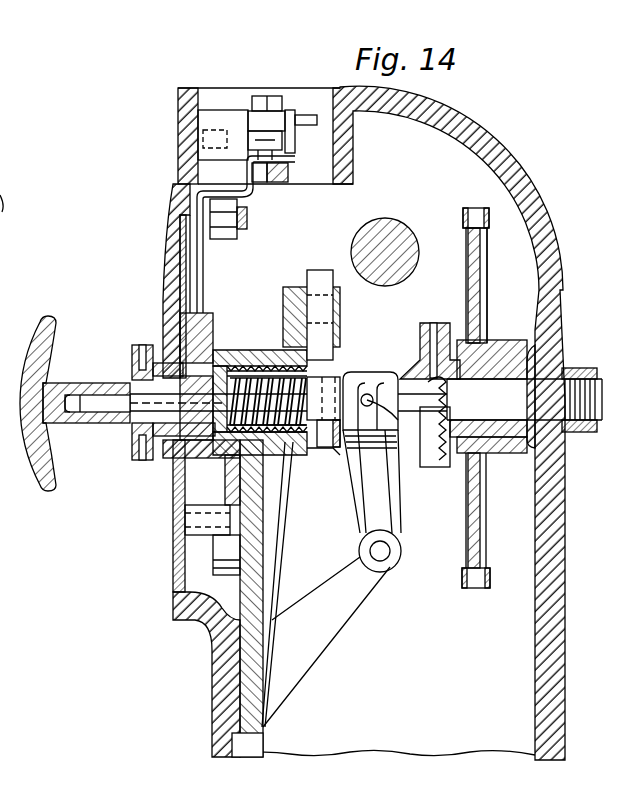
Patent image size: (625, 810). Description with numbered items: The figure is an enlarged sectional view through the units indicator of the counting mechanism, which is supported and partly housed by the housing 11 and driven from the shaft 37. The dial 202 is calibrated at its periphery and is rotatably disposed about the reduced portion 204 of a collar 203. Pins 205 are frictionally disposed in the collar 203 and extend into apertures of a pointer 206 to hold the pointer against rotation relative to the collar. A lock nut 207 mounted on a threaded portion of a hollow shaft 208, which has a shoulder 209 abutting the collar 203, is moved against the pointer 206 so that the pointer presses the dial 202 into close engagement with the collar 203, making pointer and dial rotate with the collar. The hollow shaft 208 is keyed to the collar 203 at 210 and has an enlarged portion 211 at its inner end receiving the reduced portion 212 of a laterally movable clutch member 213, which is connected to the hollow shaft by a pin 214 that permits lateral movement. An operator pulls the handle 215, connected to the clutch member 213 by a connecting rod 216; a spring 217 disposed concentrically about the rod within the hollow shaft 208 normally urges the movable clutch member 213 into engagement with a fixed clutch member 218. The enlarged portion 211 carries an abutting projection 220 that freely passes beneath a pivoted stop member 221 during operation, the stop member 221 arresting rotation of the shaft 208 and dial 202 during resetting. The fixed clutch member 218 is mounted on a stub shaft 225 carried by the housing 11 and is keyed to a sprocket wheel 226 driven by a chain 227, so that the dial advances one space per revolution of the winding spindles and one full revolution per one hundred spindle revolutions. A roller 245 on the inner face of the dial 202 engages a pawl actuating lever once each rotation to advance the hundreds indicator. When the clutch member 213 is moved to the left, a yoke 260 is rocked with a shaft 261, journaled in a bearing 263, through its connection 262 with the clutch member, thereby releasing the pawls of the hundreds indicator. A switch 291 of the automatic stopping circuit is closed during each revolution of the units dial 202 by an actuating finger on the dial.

The housing 11 is at (515, 163).
The shaft 37 is at (385, 237).
The dial 202 is at (173, 230).
The collar 203 is at (195, 323).
The reduced portion 204 is at (210, 367).
The pins 205 is at (162, 375).
The pointer 206 is at (167, 288).
The lock nut 207 is at (150, 453).
The hollow shaft 208 is at (133, 433).
The shoulder 209 is at (227, 362).
The key 210 is at (127, 383).
The enlarged portion 211 is at (320, 440).
The reduced portion 212 is at (350, 372).
The movable clutch member 213 is at (432, 324).
The pin 214 is at (330, 450).
The handle 215 is at (40, 488).
The connecting rod 216 is at (82, 423).
The spring 217 is at (280, 518).
The fixed clutch member 218 is at (478, 492).
The abutting projection 220 is at (337, 347).
The pivoted stop member 221 is at (323, 270).
The stub shaft 225 is at (562, 440).
The sprocket wheel 226 is at (480, 293).
The chain 227 is at (463, 218).
The roller 245 is at (195, 618).
The yoke 260 is at (393, 510).
The shaft 261 is at (393, 567).
The connection 262 is at (440, 458).
The bearing 263 is at (340, 633).
The switch 291 is at (287, 155).